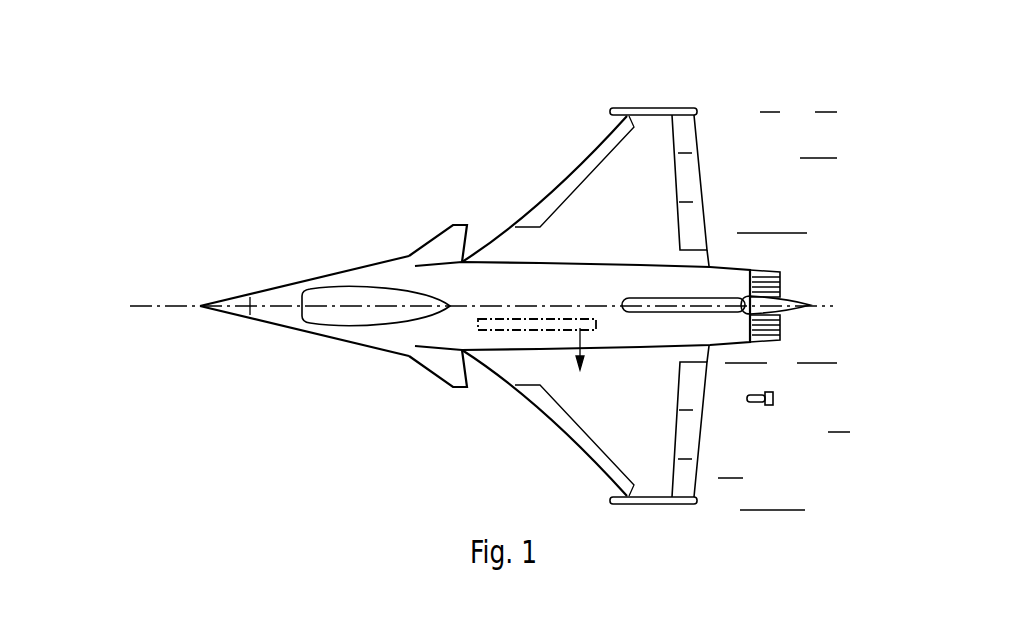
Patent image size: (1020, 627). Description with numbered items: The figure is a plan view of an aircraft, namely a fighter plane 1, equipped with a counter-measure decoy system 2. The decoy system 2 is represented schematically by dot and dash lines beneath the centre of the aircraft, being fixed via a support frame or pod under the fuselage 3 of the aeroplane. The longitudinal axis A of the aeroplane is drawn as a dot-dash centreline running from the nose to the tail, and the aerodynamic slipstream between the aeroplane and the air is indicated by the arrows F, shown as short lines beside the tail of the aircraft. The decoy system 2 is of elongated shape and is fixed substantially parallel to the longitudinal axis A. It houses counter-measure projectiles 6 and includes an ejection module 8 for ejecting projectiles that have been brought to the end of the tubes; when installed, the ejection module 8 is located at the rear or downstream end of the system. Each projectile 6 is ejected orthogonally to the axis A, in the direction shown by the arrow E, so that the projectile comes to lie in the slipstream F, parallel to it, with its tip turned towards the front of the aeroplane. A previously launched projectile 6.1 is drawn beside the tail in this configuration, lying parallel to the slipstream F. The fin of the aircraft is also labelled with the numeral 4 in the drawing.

The fighter plane 1 is at (334, 152).
The counter-measure decoy system 2 is at (511, 337).
The fuselage 3 is at (516, 272).
The vertical tail fin 4 is at (660, 208).
The projectiles 6 is at (585, 327).
The previously launched projectile 6.1 is at (755, 405).
The ejection module 8 is at (577, 308).
The longitudinal axis A is at (138, 303).
The ejection direction arrow E is at (578, 348).
The aerodynamic slipstream arrows F is at (782, 233).